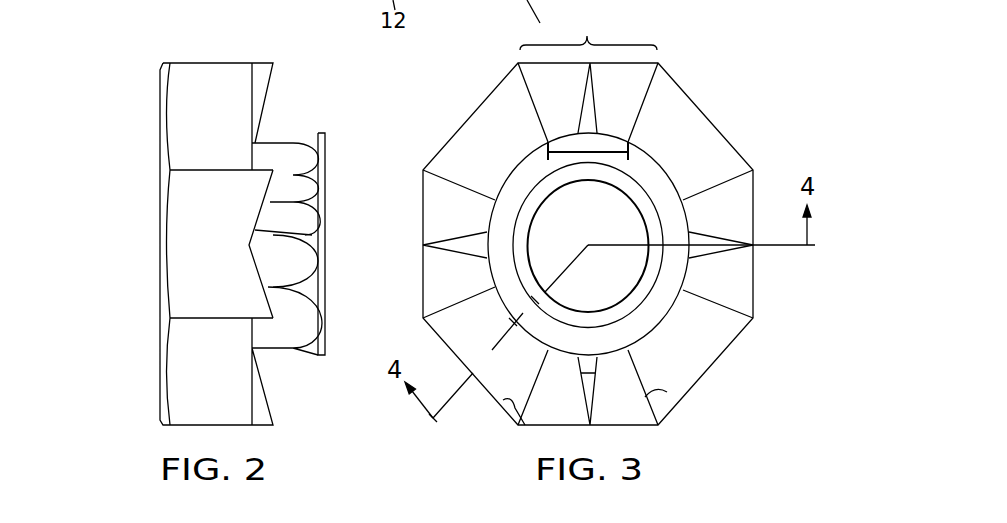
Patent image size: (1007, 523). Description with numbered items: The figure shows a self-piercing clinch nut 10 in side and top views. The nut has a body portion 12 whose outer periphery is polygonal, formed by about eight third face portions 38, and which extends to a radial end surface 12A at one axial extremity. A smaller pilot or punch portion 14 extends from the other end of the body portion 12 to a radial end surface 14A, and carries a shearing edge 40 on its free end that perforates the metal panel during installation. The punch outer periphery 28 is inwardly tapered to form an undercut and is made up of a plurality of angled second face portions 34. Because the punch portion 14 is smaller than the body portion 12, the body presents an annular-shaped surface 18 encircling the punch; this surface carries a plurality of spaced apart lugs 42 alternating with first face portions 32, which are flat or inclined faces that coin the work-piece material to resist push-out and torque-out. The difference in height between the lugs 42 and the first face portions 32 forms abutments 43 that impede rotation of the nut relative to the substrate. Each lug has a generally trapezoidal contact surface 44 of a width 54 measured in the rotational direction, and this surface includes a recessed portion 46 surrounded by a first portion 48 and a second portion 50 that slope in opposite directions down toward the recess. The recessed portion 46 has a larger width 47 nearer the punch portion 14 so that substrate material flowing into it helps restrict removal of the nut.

In FIG. 2, the self-piercing clinch nut 10 is at (110, 63).
In FIG. 3, the self-piercing clinch nut 10 is at (697, 42).
In FIG. 2, the body portion 12 is at (203, 70).
In FIG. 3, the body portion 12 is at (692, 383).
In FIG. 2, the radial end surface 12A is at (160, 192).
In FIG. 2, the punch portion 14 is at (313, 137).
In FIG. 3, the punch portion 14 is at (647, 170).
In FIG. 2, the radial end surface 14A is at (327, 157).
In FIG. 2, the annular-shaped surface 18 is at (265, 404).
In FIG. 3, the annular-shaped surface 18 is at (744, 345).
In FIG. 2, the punch outer periphery 28 is at (290, 127).
In FIG. 2, the first face portions 32 is at (252, 98).
In FIG. 3, the first face portions 32 is at (581, 263).
In FIG. 2, the second face portions 34 is at (293, 177).
In FIG. 2, the third face portions 38 is at (177, 123).
In FIG. 3, the third face portions 38 is at (500, 82).
In FIG. 2, the shearing edge 40 is at (327, 355).
In FIG. 3, the lugs 42 is at (767, 303).
In FIG. 2, the abutments 43 is at (260, 72).
In FIG. 3, the abutments 43 is at (650, 95).
In FIG. 3, the contact surface 44 is at (588, 29).
In FIG. 3, the recessed portion 46 is at (590, 115).
In FIG. 3, the larger width 47 is at (597, 358).
In FIG. 2, the first portion 48 is at (290, 218).
In FIG. 3, the first portion 48 is at (667, 177).
In FIG. 2, the second portion 50 is at (273, 288).
In FIG. 3, the second portion 50 is at (639, 146).
In FIG. 3, the width 54 is at (562, 147).